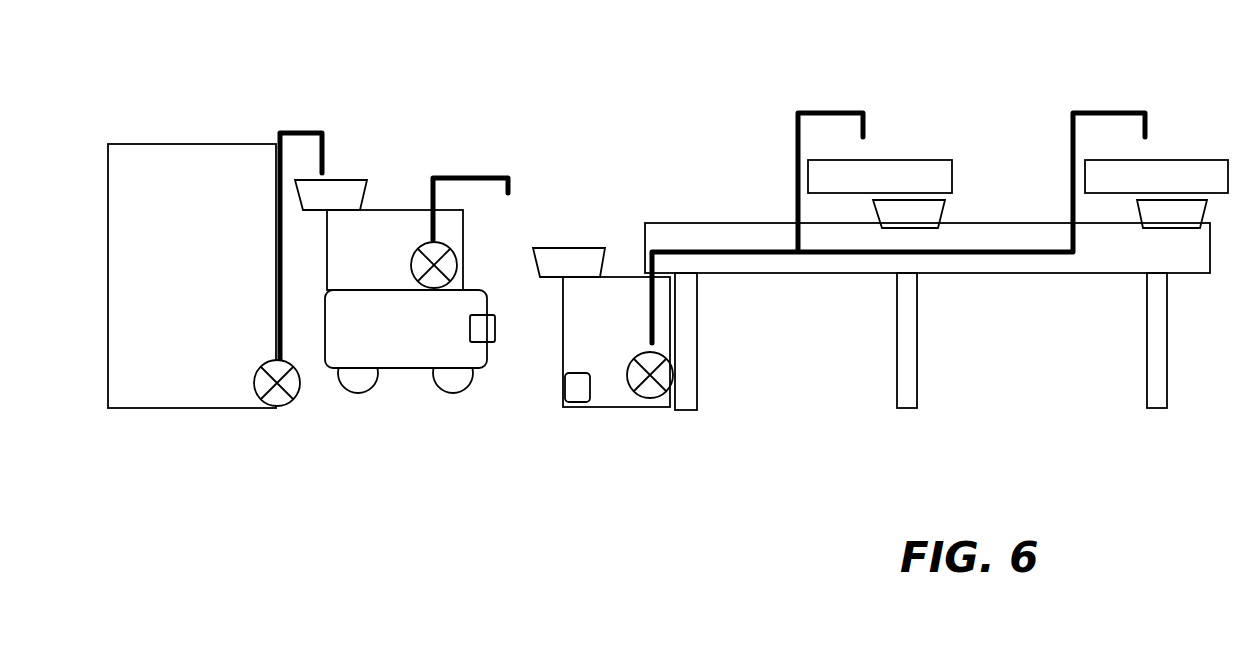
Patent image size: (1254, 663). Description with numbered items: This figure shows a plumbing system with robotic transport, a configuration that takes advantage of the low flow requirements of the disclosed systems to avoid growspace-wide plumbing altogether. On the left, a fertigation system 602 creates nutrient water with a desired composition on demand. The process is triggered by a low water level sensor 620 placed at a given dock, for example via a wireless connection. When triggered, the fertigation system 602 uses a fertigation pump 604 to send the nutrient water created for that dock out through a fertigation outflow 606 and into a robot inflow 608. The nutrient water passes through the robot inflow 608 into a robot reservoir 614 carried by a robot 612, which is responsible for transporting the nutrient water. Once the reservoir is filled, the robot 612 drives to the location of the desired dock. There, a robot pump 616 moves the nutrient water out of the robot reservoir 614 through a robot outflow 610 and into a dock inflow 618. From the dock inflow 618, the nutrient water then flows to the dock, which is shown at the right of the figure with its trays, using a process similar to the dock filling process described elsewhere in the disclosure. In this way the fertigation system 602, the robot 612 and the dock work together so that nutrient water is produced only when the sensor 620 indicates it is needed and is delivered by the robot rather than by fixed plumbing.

The fertigation system 602 is at (192, 276).
The fertigation pump 604 is at (273, 398).
The fertigation outflow 606 is at (293, 127).
The robot inflow 608 is at (350, 180).
The robot outflow 610 is at (477, 175).
The robot 612 is at (410, 341).
The robot reservoir 614 is at (420, 210).
The robot pump 616 is at (449, 264).
The dock inflow 618 is at (583, 247).
The low water level sensor 620 is at (574, 392).